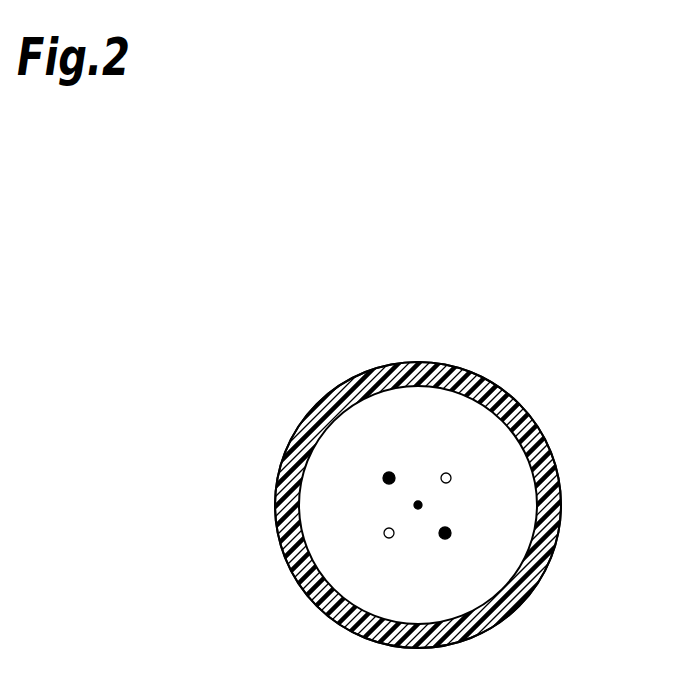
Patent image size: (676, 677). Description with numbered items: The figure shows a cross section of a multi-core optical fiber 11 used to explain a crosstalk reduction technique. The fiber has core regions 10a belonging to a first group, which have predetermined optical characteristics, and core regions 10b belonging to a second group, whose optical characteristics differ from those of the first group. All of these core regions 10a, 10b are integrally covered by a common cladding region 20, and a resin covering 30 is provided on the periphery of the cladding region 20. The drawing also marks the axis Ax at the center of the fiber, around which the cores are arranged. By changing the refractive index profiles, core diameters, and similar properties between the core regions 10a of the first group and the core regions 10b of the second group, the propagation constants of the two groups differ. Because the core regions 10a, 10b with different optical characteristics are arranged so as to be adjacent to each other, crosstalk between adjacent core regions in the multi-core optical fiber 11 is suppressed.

The multi-core optical fiber 11 is at (537, 380).
The resin covering 30 is at (480, 390).
The cladding region 20 is at (398, 420).
The core regions belonging to a first group 10a is at (383, 475).
The core regions belonging to a second group 10b is at (384, 536).
The central axis Ax is at (424, 504).